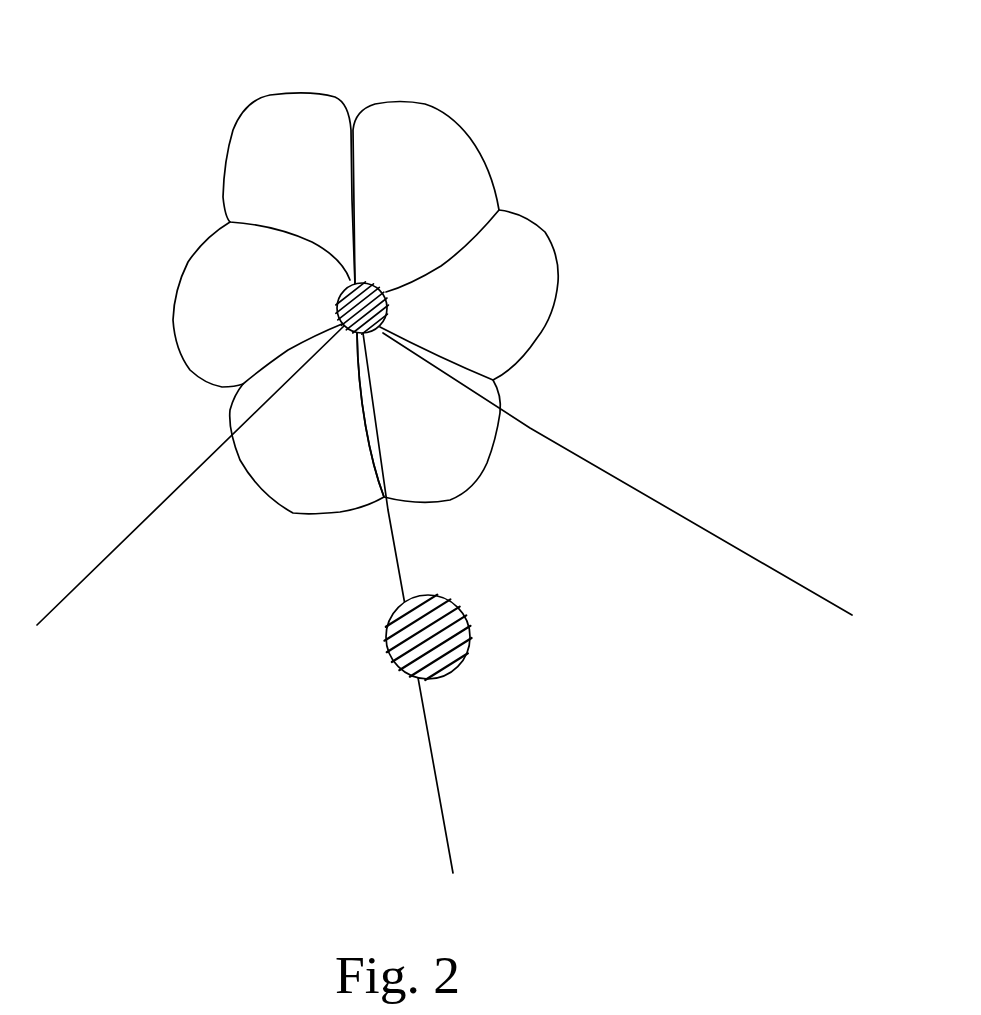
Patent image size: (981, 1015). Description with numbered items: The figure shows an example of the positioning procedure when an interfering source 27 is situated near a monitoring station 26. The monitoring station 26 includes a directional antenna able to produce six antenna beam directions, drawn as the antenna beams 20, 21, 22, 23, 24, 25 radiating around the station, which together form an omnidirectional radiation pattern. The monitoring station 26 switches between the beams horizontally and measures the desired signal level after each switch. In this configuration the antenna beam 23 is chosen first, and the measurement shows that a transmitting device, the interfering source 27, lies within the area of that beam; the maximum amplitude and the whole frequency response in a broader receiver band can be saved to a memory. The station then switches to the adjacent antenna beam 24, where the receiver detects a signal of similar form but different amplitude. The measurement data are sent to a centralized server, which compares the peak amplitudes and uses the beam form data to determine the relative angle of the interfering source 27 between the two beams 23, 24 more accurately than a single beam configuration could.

The antenna beam 20 is at (308, 90).
The antenna beam 21 is at (413, 100).
The antenna beam 22 is at (560, 278).
The antenna beam 23 is at (487, 468).
The antenna beam 24 is at (293, 513).
The antenna beam 25 is at (172, 303).
The monitoring station 26 is at (377, 282).
The interfering source 27 is at (468, 648).